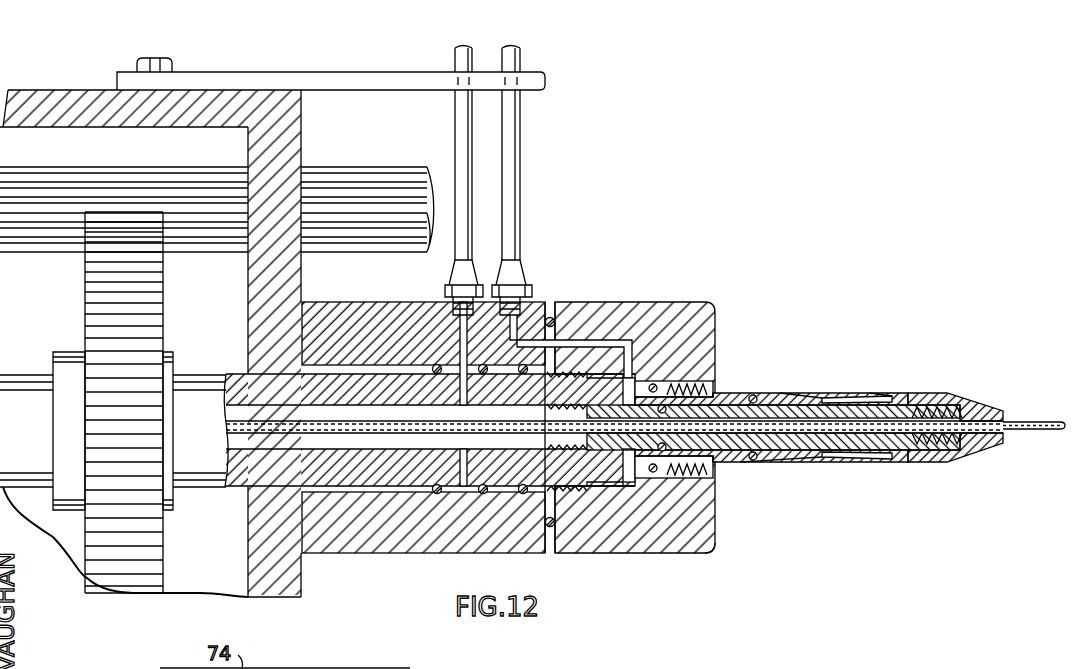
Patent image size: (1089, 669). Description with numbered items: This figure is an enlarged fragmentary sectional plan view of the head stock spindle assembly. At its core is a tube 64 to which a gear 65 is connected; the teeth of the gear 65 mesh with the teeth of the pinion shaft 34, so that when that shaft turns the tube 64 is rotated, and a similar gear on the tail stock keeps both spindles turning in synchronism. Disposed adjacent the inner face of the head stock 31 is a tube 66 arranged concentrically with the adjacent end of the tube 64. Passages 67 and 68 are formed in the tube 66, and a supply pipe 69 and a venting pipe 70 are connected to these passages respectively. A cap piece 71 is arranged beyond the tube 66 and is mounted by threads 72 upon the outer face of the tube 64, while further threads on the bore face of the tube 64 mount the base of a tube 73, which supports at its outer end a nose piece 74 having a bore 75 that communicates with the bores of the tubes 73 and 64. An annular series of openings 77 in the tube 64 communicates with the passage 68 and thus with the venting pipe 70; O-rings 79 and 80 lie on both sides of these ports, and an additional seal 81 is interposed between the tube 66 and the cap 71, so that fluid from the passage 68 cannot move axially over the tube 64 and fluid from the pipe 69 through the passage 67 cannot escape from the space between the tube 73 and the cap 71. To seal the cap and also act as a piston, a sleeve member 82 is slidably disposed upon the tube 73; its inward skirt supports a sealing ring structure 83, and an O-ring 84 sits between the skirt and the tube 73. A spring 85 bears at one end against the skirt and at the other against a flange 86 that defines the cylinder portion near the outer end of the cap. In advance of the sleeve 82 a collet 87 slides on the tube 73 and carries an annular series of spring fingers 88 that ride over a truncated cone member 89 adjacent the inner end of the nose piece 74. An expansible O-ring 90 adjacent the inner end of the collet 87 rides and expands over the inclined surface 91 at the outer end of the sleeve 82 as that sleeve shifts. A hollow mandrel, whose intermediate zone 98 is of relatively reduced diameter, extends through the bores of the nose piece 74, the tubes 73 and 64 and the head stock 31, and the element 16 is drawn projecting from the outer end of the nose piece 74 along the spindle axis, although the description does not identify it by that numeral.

The head stock 31 is at (72, 92).
The pinion shaft 34 is at (368, 176).
The venting pipe 70 is at (455, 136).
The supply pipe 69 is at (520, 156).
The passage 68 is at (462, 330).
The passage 67 is at (550, 320).
The tube 73 is at (645, 358).
The spring 85 is at (697, 373).
The flange 86 is at (713, 394).
The expansible O-ring 90 is at (780, 392).
The collet 87 is at (815, 395).
The spring fingers 88 is at (864, 393).
The nose piece 74 is at (991, 410).
The wire 16 is at (1006, 412).
The intermediate zone of the mandrel 98 is at (1033, 454).
The bore 75 is at (943, 458).
The truncated cone member 89 is at (891, 456).
The inclined surface 91 is at (740, 461).
The sleeve member 82 is at (732, 463).
The O-ring 84 is at (665, 462).
The sealing ring structure 83 is at (716, 545).
The cap piece 71 is at (667, 540).
The threads 72 is at (573, 492).
The seal 81 is at (550, 527).
The O-ring 80 is at (483, 494).
The O-ring 79 is at (437, 494).
The tube 66 is at (386, 553).
The annular series of openings 77 is at (463, 453).
The tube 64 is at (236, 490).
The gear 65 is at (118, 573).